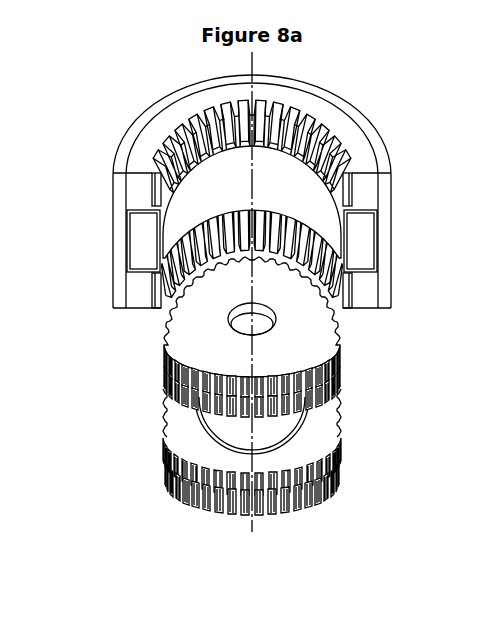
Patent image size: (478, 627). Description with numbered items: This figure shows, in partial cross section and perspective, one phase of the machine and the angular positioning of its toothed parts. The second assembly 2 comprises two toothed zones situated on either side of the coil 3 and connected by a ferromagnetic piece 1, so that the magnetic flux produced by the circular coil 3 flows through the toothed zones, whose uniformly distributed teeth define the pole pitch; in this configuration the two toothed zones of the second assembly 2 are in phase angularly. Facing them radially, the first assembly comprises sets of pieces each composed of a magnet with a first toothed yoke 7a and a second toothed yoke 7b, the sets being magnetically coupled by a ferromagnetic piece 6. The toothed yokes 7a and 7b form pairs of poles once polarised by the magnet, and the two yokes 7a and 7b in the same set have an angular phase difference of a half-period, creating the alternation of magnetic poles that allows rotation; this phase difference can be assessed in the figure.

The ferromagnetic piece 1 is at (118, 152).
The second assembly 2 is at (133, 189).
The coil 3 is at (368, 237).
The ferromagnetic piece 6 is at (225, 435).
The first toothed yoke 7a is at (295, 416).
The second toothed yoke 7b is at (176, 471).